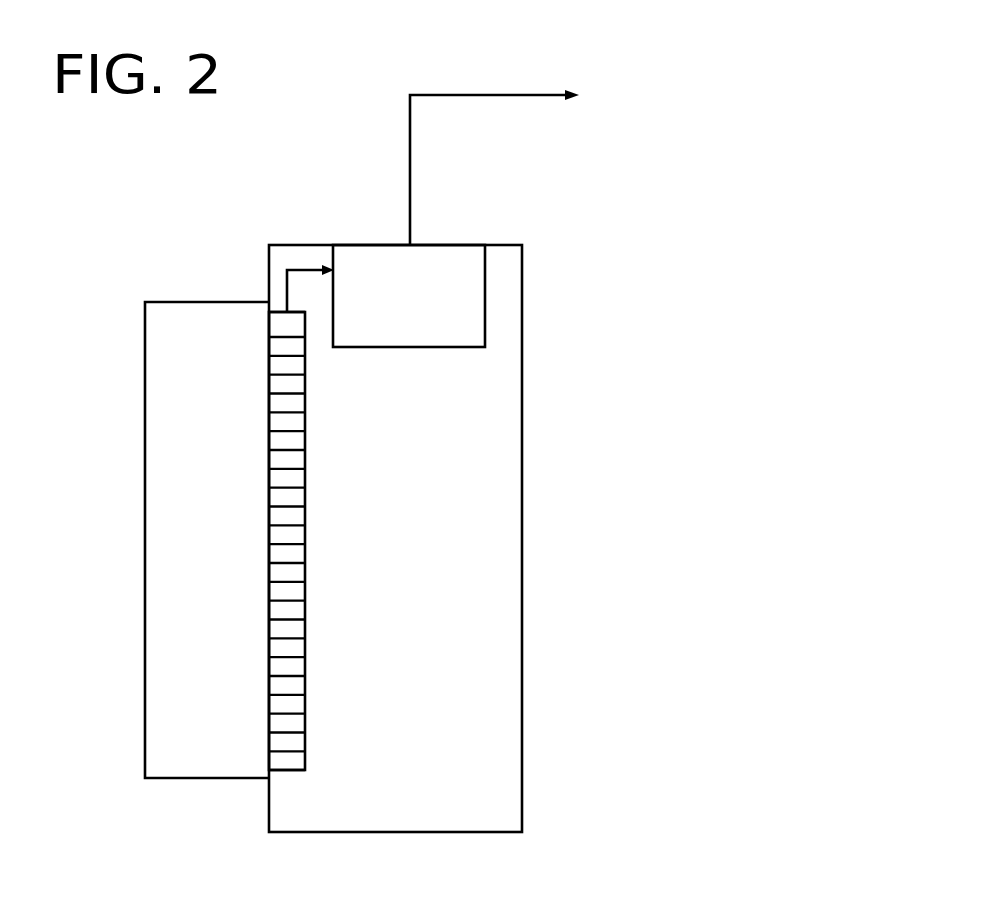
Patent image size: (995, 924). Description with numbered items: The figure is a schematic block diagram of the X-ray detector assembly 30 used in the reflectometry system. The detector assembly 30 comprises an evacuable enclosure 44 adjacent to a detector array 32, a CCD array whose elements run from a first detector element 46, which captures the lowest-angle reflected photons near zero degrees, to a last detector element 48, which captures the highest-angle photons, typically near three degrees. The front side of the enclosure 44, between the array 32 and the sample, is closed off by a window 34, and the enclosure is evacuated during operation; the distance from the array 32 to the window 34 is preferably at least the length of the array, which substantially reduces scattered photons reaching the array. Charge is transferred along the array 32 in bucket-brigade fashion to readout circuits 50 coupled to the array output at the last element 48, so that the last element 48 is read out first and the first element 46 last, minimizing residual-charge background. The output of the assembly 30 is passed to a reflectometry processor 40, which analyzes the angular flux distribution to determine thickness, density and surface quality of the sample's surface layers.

The detector assembly 30 is at (522, 372).
The detector array 32 is at (305, 548).
The window 34 is at (143, 360).
The reflectometry processor 40 is at (634, 159).
The evacuable enclosure 44 is at (213, 688).
The first detector element 46 is at (295, 770).
The last detector element 48 is at (268, 330).
The readout circuits 50 is at (405, 347).